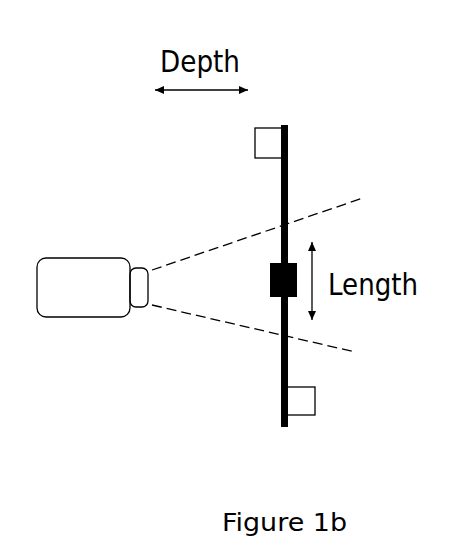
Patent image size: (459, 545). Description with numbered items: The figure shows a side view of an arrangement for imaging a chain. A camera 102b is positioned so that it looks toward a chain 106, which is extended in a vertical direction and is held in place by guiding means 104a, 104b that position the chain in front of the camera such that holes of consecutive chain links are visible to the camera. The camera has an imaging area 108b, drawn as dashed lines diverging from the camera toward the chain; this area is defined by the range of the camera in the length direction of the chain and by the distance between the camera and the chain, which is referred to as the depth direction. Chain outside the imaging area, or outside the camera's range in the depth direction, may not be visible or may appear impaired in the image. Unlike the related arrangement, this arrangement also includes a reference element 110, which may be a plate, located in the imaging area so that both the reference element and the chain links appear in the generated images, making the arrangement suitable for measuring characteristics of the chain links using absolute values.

The camera 102b is at (120, 257).
The guiding means 104a is at (255, 142).
The guiding means 104b is at (315, 400).
The chain 106 is at (288, 182).
The imaging area 108b is at (195, 312).
The reference element 110 is at (277, 267).